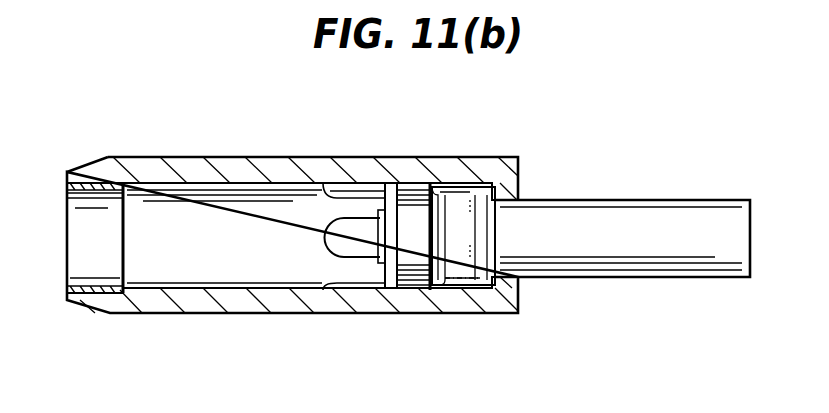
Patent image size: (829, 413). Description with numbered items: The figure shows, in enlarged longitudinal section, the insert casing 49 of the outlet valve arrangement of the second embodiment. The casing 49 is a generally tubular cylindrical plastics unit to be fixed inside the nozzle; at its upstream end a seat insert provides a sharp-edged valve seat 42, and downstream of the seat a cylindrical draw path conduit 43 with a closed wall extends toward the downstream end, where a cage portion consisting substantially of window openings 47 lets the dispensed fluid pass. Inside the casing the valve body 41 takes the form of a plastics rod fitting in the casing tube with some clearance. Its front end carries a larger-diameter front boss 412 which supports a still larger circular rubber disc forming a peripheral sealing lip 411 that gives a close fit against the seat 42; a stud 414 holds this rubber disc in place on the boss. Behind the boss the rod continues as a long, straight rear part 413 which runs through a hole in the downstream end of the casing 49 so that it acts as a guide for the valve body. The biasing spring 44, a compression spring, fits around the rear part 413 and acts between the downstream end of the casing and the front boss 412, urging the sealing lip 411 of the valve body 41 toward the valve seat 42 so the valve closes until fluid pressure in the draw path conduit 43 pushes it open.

The valve body 41 is at (541, 182).
The valve seat 42 is at (125, 252).
The draw path conduit 43 is at (277, 245).
The biasing spring 44 is at (480, 192).
The window openings 47 is at (353, 188).
The casing 49 is at (139, 148).
The sealing lip 411 is at (412, 190).
The front boss 412 is at (413, 252).
The rear part 413 is at (632, 222).
The stud 414 is at (378, 233).